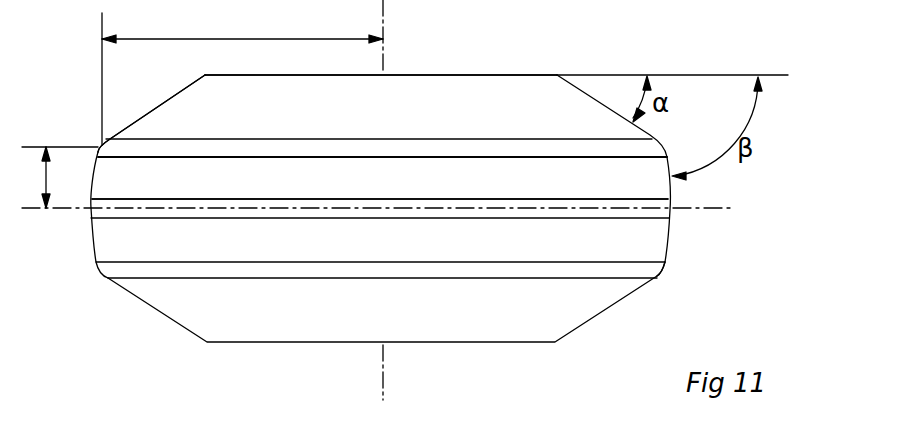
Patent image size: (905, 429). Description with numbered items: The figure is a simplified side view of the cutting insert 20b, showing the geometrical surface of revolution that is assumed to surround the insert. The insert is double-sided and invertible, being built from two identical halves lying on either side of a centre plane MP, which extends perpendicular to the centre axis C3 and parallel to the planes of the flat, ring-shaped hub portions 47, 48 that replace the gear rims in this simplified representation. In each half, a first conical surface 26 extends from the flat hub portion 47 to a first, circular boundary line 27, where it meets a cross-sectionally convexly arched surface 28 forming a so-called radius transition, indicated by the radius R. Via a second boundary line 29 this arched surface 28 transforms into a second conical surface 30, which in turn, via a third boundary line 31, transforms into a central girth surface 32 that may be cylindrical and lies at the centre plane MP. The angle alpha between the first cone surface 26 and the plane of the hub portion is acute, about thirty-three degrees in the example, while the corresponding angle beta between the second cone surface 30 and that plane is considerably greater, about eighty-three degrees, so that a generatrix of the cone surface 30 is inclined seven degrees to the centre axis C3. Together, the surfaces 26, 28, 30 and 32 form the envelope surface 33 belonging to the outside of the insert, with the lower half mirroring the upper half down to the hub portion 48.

The first conical surface 26 is at (309, 111).
The first circular boundary line 27 is at (388, 139).
The convexly arched surface 28 is at (243, 148).
The second boundary line 29 is at (398, 157).
The second conical surface 30 is at (348, 187).
The third boundary line 31 is at (497, 199).
The central girth surface 32 is at (115, 216).
The envelope surface 33 is at (122, 120).
The hub portion 47 is at (473, 75).
The hub portion 48 is at (485, 343).
The centre axis C3 is at (383, 10).
The rounded corner R is at (610, 235).
The centre plane MP is at (386, 192).
The cutting insert 20b is at (443, 424).